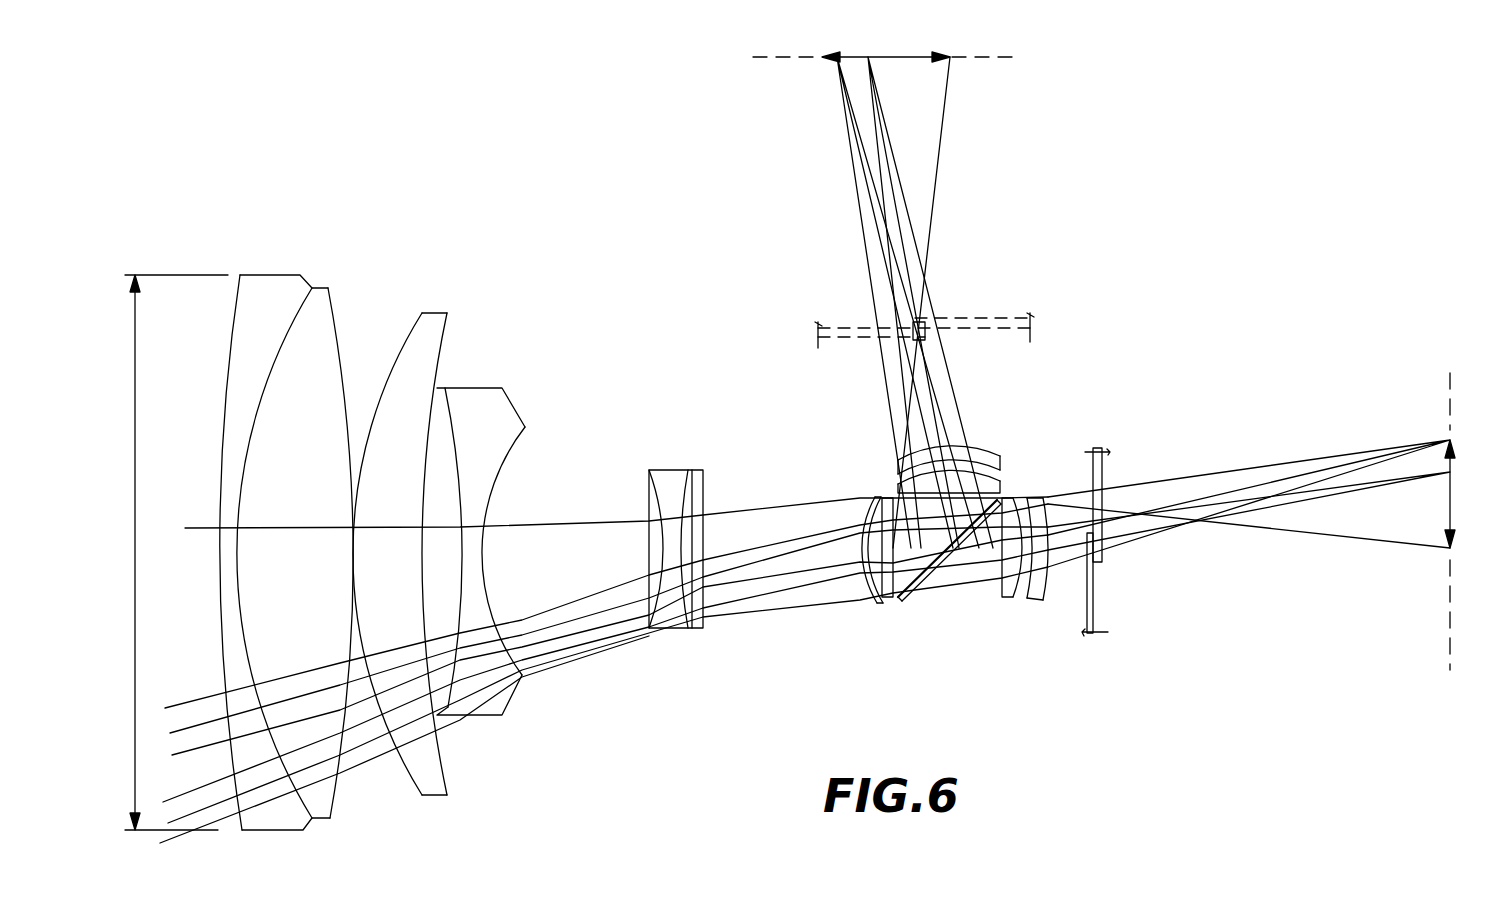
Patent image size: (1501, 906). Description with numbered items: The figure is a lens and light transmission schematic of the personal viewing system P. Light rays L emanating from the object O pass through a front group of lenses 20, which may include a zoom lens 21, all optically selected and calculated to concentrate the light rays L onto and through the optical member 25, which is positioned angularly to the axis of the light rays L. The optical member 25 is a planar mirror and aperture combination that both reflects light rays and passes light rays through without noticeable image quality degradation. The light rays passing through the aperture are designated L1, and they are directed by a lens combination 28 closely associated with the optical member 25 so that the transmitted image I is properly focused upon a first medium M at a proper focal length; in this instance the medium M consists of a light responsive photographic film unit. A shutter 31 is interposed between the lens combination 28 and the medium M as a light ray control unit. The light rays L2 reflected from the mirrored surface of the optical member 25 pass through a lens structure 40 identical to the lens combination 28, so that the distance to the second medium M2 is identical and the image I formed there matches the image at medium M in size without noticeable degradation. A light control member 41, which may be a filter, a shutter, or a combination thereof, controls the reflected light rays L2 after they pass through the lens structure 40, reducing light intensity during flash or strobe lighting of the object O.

The object O is at (135, 468).
The zoom lens 21 is at (356, 288).
The front group of lenses 20 is at (470, 363).
The light rays L is at (573, 653).
The optical member 25 is at (933, 569).
The lens combination 28 is at (1019, 592).
The shutter 31 is at (1102, 610).
The lens structure 40 is at (996, 437).
The light control member 41 is at (973, 318).
The personal viewing system P is at (1062, 330).
The second medium M2 is at (983, 60).
The image I is at (910, 54).
The first medium M is at (1448, 595).
The reflected light rays L2 is at (908, 203).
The passing light rays L1 is at (1205, 530).